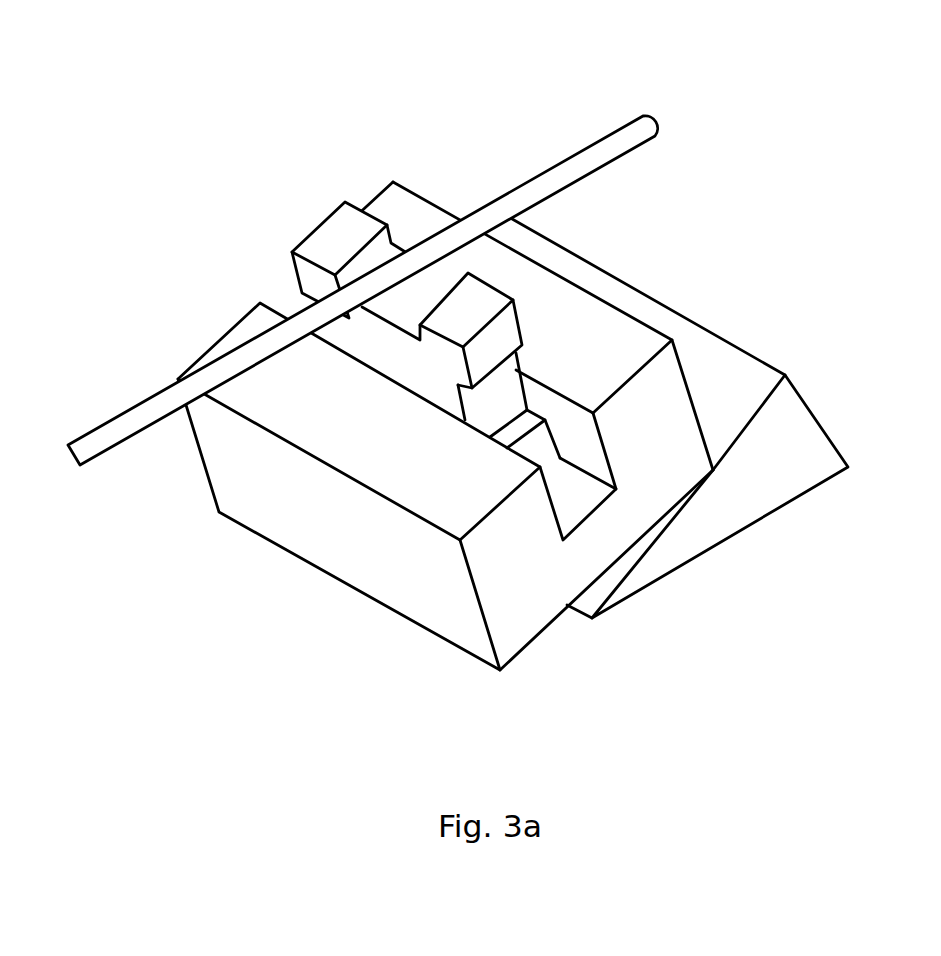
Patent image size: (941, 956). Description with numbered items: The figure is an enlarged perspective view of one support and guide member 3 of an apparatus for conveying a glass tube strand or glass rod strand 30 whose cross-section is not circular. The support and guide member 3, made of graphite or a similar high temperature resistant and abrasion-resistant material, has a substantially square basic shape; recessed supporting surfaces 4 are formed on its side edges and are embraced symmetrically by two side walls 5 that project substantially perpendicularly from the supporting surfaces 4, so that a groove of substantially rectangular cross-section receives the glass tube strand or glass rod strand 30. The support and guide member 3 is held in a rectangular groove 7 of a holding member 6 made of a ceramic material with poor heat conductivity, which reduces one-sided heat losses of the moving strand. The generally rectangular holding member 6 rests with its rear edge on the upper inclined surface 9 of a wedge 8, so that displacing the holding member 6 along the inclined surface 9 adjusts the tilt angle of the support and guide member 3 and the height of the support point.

The support and guide member 3 is at (425, 370).
The recessed supporting surface 4 is at (405, 308).
The side wall 5 is at (338, 222).
The holding member 6 is at (655, 387).
The rectangular groove 7 is at (567, 493).
The wedge 8 is at (800, 442).
The upper inclined surface 9 is at (737, 372).
The glass tube strand or glass rod strand 30 is at (585, 148).